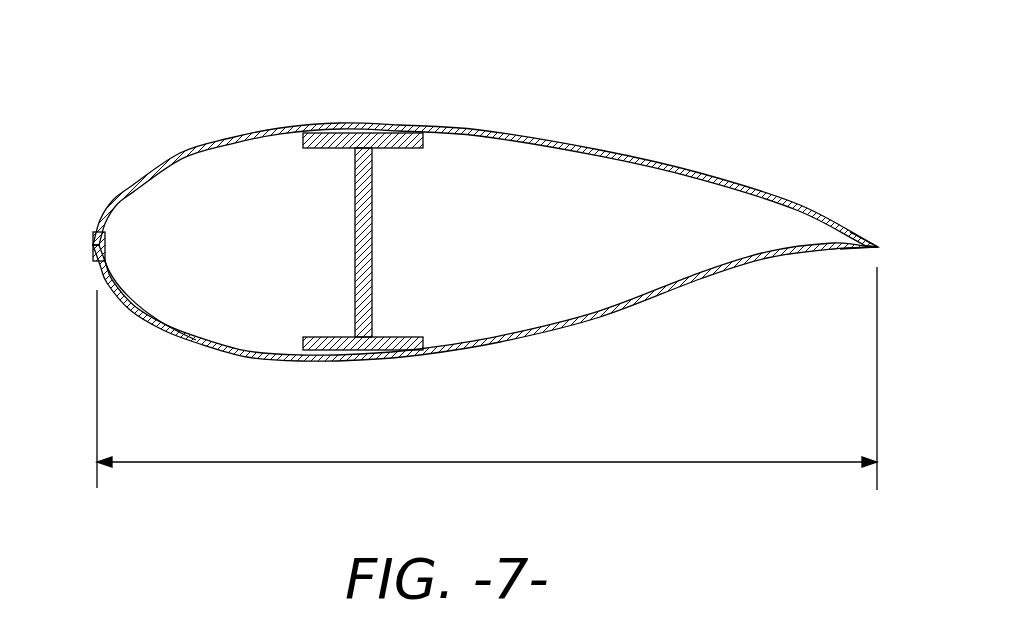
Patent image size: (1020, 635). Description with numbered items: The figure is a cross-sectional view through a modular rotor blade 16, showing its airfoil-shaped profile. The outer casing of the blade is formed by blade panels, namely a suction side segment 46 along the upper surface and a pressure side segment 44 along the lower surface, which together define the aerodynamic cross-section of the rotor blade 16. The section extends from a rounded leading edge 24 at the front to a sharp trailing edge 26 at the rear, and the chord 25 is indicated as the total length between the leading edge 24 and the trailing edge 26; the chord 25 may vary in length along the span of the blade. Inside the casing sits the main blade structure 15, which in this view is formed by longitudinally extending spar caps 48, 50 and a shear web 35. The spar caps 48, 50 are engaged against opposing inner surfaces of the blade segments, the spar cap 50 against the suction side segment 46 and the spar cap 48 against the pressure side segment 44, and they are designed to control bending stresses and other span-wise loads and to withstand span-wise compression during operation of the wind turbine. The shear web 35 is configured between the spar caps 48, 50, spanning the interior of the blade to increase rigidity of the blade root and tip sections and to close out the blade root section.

The rotor blade 16 is at (710, 117).
The suction side segment 46 is at (531, 136).
The pressure side segment 44 is at (603, 311).
The leading edge 24 is at (92, 243).
The trailing edge 26 is at (860, 236).
The main blade structure 15 is at (354, 300).
The spar cap 50 is at (387, 151).
The shear web 35 is at (353, 247).
The spar cap 48 is at (390, 335).
The chord 25 is at (645, 463).